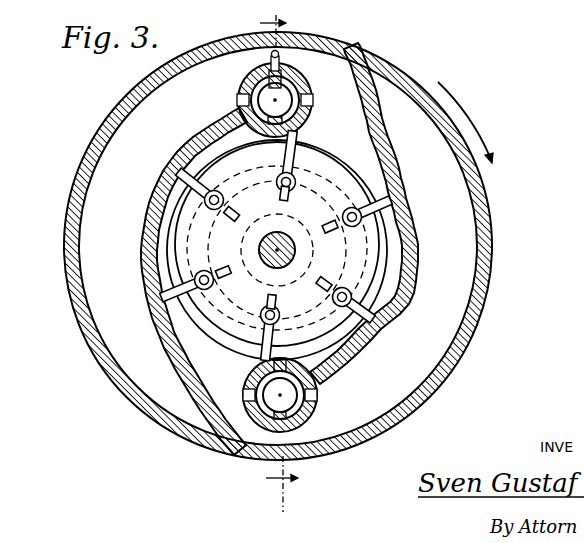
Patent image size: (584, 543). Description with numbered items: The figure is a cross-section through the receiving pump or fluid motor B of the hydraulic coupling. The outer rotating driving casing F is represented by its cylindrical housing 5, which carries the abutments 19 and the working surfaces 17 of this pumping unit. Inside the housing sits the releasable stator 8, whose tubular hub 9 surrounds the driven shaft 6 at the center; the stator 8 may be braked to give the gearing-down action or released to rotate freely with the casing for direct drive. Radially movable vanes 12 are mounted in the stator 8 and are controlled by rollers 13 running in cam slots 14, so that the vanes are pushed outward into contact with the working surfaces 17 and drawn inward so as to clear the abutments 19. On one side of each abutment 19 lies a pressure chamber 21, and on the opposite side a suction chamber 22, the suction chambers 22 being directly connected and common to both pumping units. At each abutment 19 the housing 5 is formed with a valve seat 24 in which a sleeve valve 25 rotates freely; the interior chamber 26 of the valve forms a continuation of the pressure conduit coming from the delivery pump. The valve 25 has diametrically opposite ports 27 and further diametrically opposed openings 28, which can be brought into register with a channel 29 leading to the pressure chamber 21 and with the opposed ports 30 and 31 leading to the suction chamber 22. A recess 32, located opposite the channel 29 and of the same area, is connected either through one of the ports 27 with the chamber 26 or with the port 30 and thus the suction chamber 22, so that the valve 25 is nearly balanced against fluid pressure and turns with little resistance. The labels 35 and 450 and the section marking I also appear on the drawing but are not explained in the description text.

The cylindrical housing 5 is at (78, 208).
The driven shaft 6 is at (284, 240).
The stator 8 is at (382, 237).
The tubular hub 9 is at (312, 256).
The vanes 12 is at (388, 200).
The rollers 13 is at (267, 301).
The cam slots 14 is at (205, 248).
The working surfaces 17 is at (157, 260).
The abutments 19 is at (306, 126).
The pressure chambers 21 is at (216, 128).
The suction chambers 22 is at (137, 115).
The valve seats 24 is at (250, 68).
The sleeve valves 25 is at (255, 86).
The interior chambers 26 is at (278, 100).
The ports 27 is at (291, 80).
The openings 28 is at (283, 70).
The channel 29 is at (254, 125).
The port 30 is at (305, 99).
The port 31 is at (238, 99).
The recess 32 is at (298, 85).
The partition 35 is at (183, 372).
The section line 450 is at (257, 33).
The section line I- I is at (279, 268).
The driving rotor or casing F is at (493, 258).
The receiving pump B is at (69, 394).